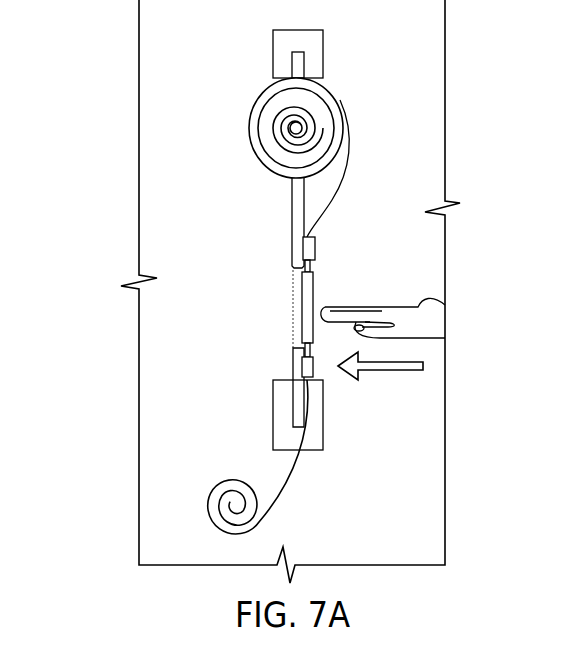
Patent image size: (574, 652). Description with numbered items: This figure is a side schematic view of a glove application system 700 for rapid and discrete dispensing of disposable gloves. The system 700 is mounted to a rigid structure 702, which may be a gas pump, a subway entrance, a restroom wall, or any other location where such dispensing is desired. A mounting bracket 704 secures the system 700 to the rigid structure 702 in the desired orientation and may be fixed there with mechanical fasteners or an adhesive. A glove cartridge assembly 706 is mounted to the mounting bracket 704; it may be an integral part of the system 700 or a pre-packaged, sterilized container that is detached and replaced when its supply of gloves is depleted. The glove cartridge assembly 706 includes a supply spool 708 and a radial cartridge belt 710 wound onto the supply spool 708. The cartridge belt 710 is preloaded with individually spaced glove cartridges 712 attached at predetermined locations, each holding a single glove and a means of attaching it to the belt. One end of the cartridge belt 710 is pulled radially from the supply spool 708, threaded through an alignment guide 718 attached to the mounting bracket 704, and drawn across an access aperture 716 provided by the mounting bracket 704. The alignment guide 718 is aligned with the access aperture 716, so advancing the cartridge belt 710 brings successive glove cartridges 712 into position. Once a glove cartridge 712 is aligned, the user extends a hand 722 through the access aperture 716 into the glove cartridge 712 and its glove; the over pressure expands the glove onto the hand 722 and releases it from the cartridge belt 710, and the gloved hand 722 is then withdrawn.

The glove application system 700 is at (106, 50).
The rigid structure 702 is at (220, 61).
The mounting bracket 704 is at (323, 53).
The glove cartridge assembly 706 is at (250, 167).
The supply spool 708 is at (346, 101).
The cartridge belt 710 is at (345, 187).
The glove cartridge 712 is at (314, 283).
The access aperture 716 is at (297, 268).
The alignment guide 718 is at (316, 250).
The hand 722 is at (445, 305).